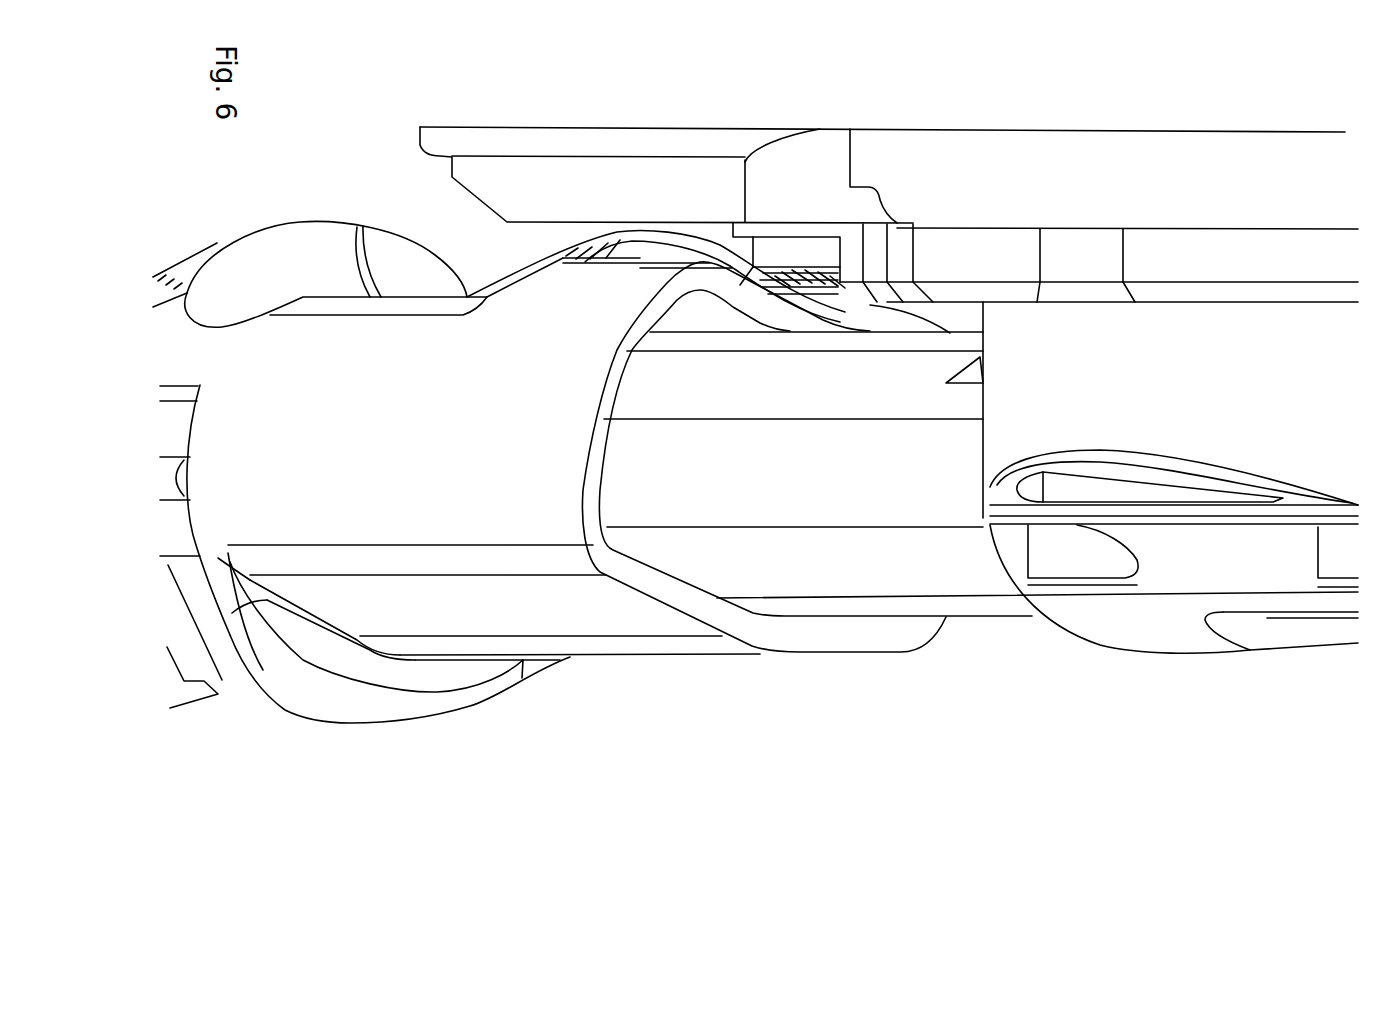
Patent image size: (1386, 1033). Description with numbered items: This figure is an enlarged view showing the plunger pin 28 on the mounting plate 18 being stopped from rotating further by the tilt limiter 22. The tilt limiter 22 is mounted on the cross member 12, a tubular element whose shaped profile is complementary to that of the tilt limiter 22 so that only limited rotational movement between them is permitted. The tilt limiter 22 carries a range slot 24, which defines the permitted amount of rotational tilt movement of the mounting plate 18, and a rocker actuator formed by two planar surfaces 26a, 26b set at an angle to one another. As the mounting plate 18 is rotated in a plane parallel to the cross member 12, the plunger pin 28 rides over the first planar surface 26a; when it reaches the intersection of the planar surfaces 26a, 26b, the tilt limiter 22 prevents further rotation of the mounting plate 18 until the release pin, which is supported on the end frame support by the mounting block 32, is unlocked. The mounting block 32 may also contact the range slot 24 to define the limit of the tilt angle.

The cross member 12 is at (901, 578).
The mounting plate 18 is at (1265, 152).
The tilt limiter 22 is at (295, 242).
The range slot 24 is at (252, 667).
The first planar surface 26a is at (890, 310).
The second planar surface 26b is at (641, 258).
The plunger pin 28 is at (807, 255).
The mounting block 32 is at (184, 604).